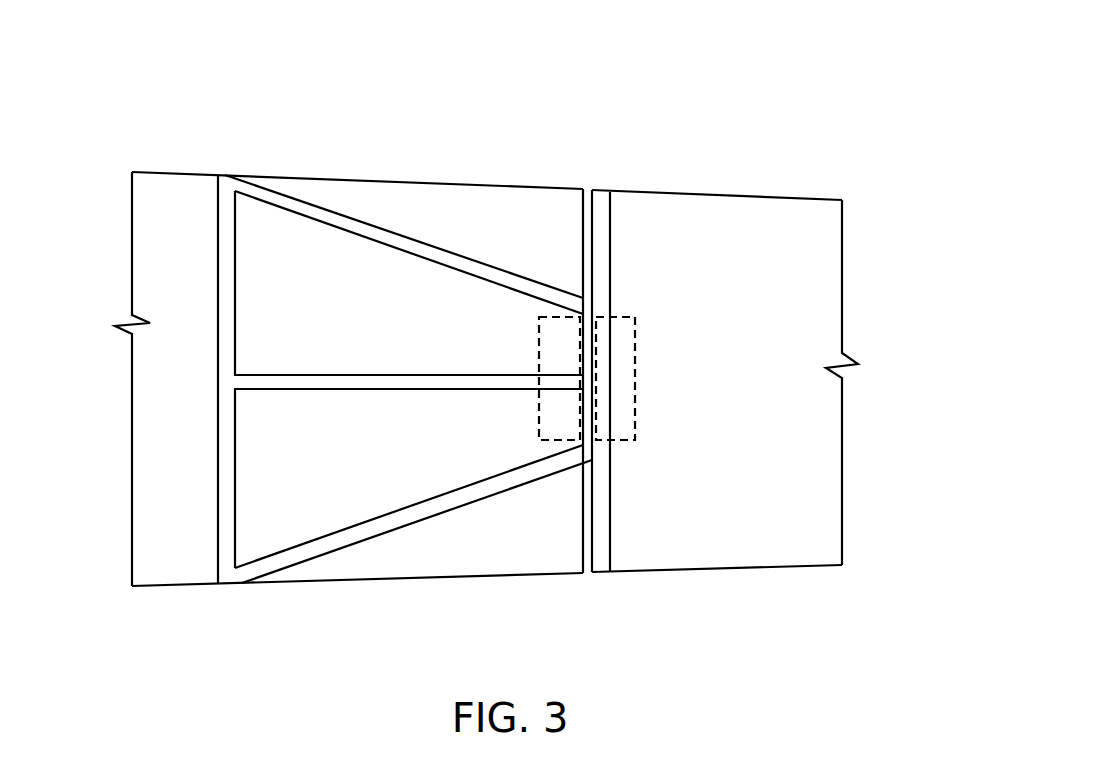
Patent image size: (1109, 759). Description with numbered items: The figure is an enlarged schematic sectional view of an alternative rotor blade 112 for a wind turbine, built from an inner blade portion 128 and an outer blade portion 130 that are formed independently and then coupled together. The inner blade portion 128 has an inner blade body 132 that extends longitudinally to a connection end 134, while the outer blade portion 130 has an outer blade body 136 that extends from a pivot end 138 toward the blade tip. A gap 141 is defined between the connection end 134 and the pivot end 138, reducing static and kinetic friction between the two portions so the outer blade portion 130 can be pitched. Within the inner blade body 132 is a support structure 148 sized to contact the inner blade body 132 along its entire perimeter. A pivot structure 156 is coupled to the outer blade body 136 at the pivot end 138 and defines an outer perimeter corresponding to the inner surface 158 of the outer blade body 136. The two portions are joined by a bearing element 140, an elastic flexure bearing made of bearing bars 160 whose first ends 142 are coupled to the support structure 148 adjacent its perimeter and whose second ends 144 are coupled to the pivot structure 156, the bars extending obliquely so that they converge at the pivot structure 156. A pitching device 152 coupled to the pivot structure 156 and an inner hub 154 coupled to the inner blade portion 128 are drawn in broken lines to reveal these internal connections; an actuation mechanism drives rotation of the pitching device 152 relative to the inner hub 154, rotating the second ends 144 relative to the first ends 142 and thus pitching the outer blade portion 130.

The rotor blade 112 is at (834, 60).
The inner blade portion 128 is at (452, 172).
The outer blade portion 130 is at (776, 176).
The inner blade body 132 is at (156, 578).
The connection end 134 is at (588, 228).
The outer blade body 136 is at (690, 193).
The pivot end 138 is at (611, 244).
The bearing element 140 is at (494, 224).
The gap 141 is at (587, 590).
The bearing first end 142 is at (231, 182).
The bearing second end 144 is at (572, 292).
The support structure 148 is at (225, 270).
The pitching device 152 is at (628, 442).
The inner hub 154 is at (540, 408).
The pivot structure 156 is at (600, 530).
The inner surface 158 is at (843, 200).
The bearing bars 160 is at (385, 215).